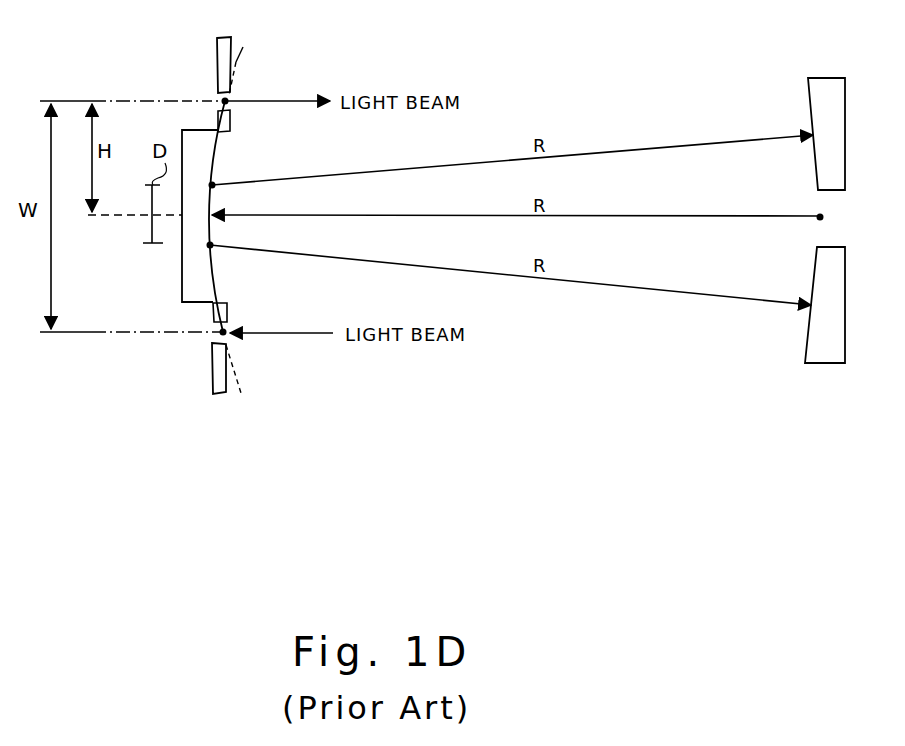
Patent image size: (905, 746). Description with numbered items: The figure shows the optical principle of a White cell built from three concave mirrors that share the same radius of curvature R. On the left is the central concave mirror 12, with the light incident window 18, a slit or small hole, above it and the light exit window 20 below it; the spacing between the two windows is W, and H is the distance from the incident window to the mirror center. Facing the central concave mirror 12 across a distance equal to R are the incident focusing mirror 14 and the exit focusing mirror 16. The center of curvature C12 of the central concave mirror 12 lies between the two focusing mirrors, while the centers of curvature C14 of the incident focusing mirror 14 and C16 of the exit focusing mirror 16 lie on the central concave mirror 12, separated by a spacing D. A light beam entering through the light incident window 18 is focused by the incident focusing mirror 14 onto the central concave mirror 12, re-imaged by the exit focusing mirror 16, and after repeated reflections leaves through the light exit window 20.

The central concave mirror 12 is at (182, 285).
The incident focusing mirror 14 is at (823, 78).
The exit focusing mirror 16 is at (818, 365).
The light incident window 18 is at (222, 100).
The light exit window 20 is at (220, 334).
The center of curvature of the central concave mirror C12 is at (818, 214).
The center of curvature of the incident focusing mirror C14 is at (214, 184).
The center of curvature of the exit focusing mirror C16 is at (214, 249).